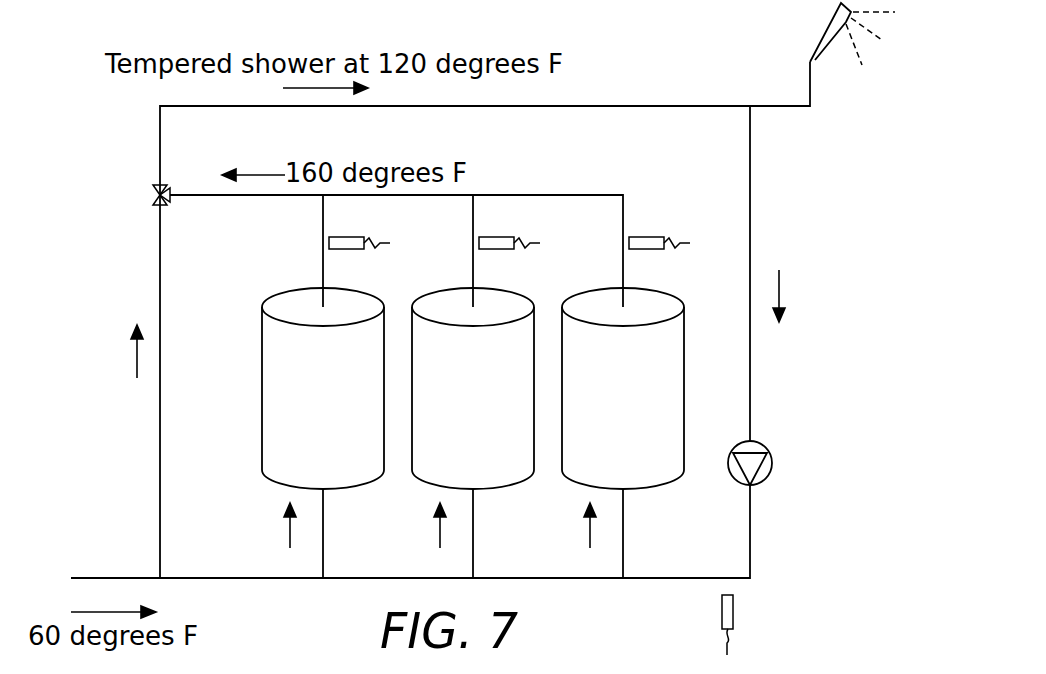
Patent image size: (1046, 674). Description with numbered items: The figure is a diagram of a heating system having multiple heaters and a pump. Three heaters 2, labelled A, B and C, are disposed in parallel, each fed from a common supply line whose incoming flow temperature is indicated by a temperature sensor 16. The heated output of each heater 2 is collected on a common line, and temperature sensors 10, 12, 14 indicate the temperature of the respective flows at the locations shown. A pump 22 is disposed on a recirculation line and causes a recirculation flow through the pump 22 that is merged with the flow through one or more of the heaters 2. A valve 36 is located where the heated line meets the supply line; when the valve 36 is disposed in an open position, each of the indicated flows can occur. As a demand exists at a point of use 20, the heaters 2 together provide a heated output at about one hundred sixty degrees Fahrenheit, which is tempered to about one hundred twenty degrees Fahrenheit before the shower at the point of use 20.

The heater 2 is at (314, 411).
The temperature sensor 10 is at (344, 237).
The temperature sensor 12 is at (494, 237).
The temperature sensor 14 is at (644, 237).
The temperature sensor 16 is at (733, 607).
The point of use 20 is at (824, 23).
The pump 22 is at (770, 470).
The valve 36 is at (153, 198).